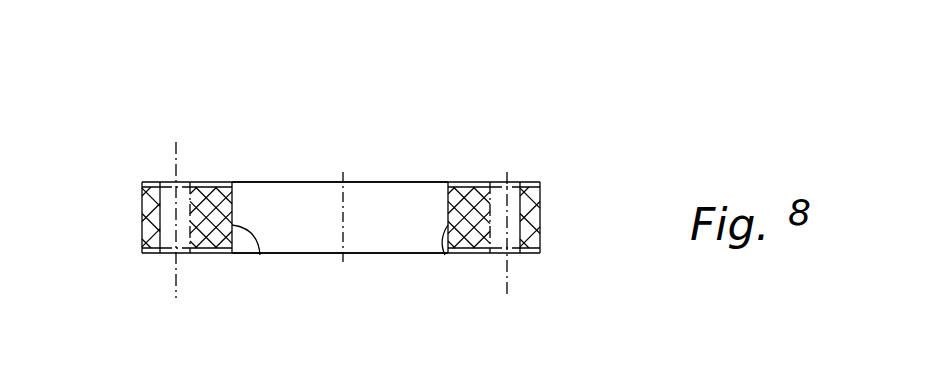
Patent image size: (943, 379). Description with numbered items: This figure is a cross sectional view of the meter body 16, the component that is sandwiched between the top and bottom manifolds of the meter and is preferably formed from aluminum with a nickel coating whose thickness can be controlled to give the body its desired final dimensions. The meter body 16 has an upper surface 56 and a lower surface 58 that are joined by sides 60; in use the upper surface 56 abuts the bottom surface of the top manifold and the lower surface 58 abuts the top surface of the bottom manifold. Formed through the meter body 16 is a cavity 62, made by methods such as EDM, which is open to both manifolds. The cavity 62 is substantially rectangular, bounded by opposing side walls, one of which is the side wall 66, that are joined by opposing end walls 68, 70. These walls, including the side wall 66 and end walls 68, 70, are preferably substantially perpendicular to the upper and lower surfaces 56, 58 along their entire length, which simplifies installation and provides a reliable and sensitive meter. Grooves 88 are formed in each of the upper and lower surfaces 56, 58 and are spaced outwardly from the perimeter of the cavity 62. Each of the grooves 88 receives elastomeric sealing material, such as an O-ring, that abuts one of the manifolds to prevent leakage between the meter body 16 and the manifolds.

The meter body 16 is at (560, 129).
The upper surface 56 is at (437, 177).
The lower surface 58 is at (434, 262).
The sides 60 is at (129, 220).
The cavity 62 is at (310, 207).
The side wall 66 is at (260, 255).
The end wall 68 is at (440, 254).
The end wall 70 is at (392, 237).
The grooves 88 is at (212, 182).